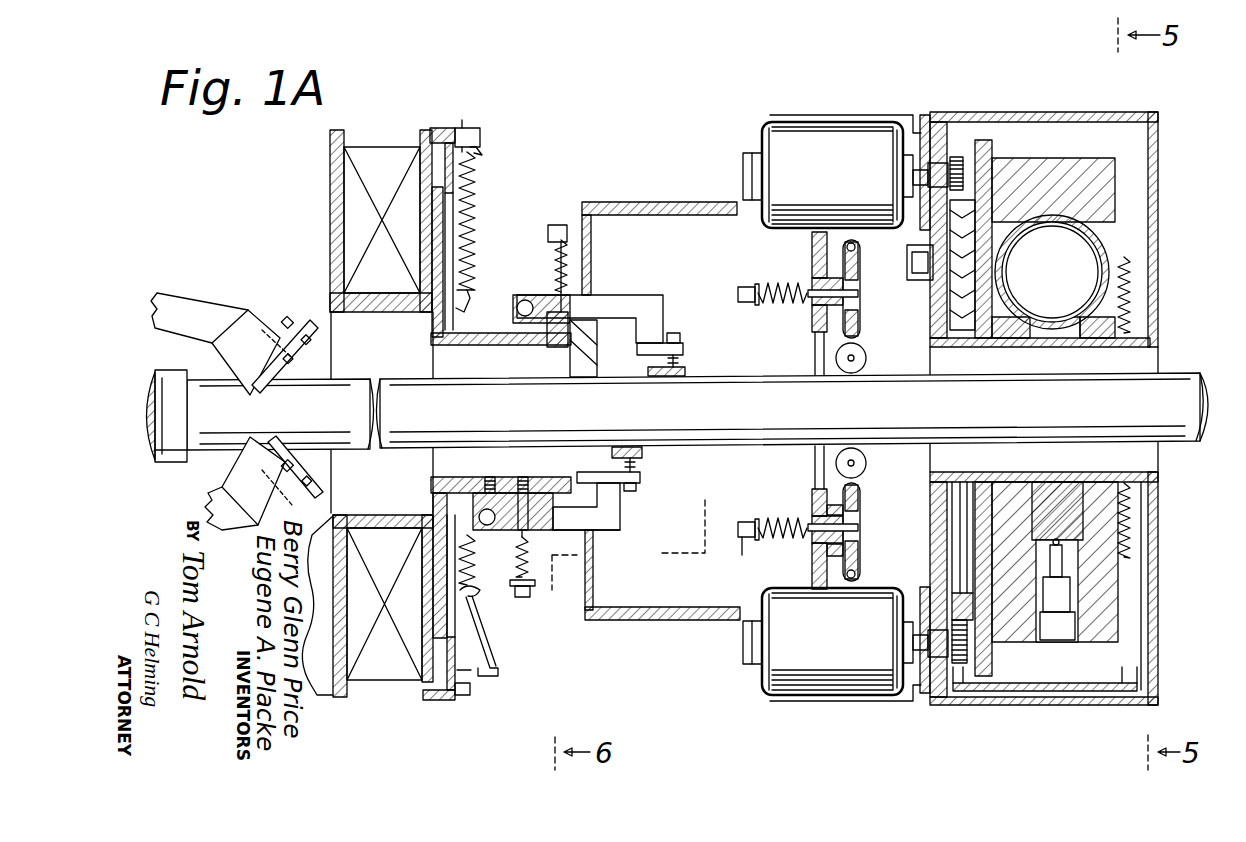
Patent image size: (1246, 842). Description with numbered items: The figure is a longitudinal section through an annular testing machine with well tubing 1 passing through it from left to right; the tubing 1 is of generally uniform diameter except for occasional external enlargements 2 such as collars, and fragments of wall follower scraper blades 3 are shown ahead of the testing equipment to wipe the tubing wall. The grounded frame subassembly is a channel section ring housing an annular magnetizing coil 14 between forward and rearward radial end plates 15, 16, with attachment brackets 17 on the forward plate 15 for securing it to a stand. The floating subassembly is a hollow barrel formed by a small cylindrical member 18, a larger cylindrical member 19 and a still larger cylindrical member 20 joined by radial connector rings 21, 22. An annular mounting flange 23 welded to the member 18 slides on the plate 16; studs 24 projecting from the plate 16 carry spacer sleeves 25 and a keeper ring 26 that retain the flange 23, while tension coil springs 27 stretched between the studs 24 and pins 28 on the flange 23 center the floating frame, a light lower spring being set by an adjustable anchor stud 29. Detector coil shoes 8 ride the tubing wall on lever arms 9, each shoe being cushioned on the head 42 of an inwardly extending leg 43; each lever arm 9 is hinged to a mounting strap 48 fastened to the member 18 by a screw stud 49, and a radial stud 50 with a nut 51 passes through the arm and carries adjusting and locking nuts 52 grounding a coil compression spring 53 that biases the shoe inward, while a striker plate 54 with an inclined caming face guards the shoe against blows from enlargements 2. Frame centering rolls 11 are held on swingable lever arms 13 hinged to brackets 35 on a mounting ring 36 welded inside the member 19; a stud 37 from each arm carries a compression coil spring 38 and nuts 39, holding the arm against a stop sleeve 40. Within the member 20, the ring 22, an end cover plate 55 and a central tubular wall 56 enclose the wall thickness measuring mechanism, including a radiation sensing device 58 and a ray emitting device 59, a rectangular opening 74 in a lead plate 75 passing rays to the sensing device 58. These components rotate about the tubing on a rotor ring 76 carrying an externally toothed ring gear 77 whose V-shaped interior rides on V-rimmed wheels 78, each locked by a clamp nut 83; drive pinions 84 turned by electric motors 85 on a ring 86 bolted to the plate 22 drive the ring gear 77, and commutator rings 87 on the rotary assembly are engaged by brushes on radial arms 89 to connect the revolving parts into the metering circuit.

The well tubing 1 is at (1190, 405).
The external enlargements 2 is at (160, 370).
The wall follower scraper blades 3 is at (292, 305).
The detector coil shoes 8 is at (684, 372).
The lever arm 9 is at (625, 296).
The frame centering rolls 11 is at (838, 358).
The lever arm 13 is at (860, 325).
The annular magnetizing coil 14 is at (392, 682).
The forward radial end plate 15 is at (345, 670).
The rearward radial end plate 16 is at (428, 690).
The attachment brackets 17 is at (330, 702).
The cylindrical member 18 is at (482, 333).
The cylindrical member 19 is at (655, 202).
The cylindrical member 20 is at (1055, 211).
The connector ring 21 is at (592, 245).
The connector ring 22 is at (935, 320).
The annular mounting flange 23 is at (470, 298).
The studs 24 is at (468, 128).
The spacer sleeves 25 is at (447, 702).
The keeper ring 26 is at (483, 150).
The tension coil springs 27 is at (476, 212).
The pins 28 is at (470, 478).
The adjustable anchor stud 29 is at (488, 640).
The brackets 35 is at (830, 530).
The transverse mounting plate 36 is at (835, 565).
The stud 37 is at (740, 540).
The compression coil spring 38 is at (790, 520).
The adjusting and locking nuts 39 is at (748, 520).
The stop sleeve 40 is at (858, 522).
The head 42 is at (684, 348).
The inwardly extending leg 43 is at (622, 500).
The mounting strap 48 is at (505, 530).
The screw stud 49 is at (492, 480).
The radial stud 50 is at (532, 586).
The nut 51 is at (528, 480).
The adjusting and locking nuts 52 is at (520, 598).
The coil compression spring 53 is at (482, 590).
The striker plate 54 is at (582, 380).
The end cover plate 55 is at (1158, 140).
The central tubular wall 56 is at (1160, 343).
The radiation sensing device 58 is at (1105, 245).
The ray emitting device 59 is at (1112, 590).
The rectangular opening 74 is at (1048, 323).
The lead plate 75 is at (1008, 338).
The rotor ring 76 is at (992, 655).
The ring gear 77 is at (935, 585).
The wheels 78 is at (965, 238).
The nut 83 is at (920, 265).
The drive pinions 84 is at (955, 155).
The electric motors 85 is at (800, 125).
The ring 86 is at (925, 694).
The commutator rings 87 is at (1132, 300).
The radial arms 89 is at (1140, 570).